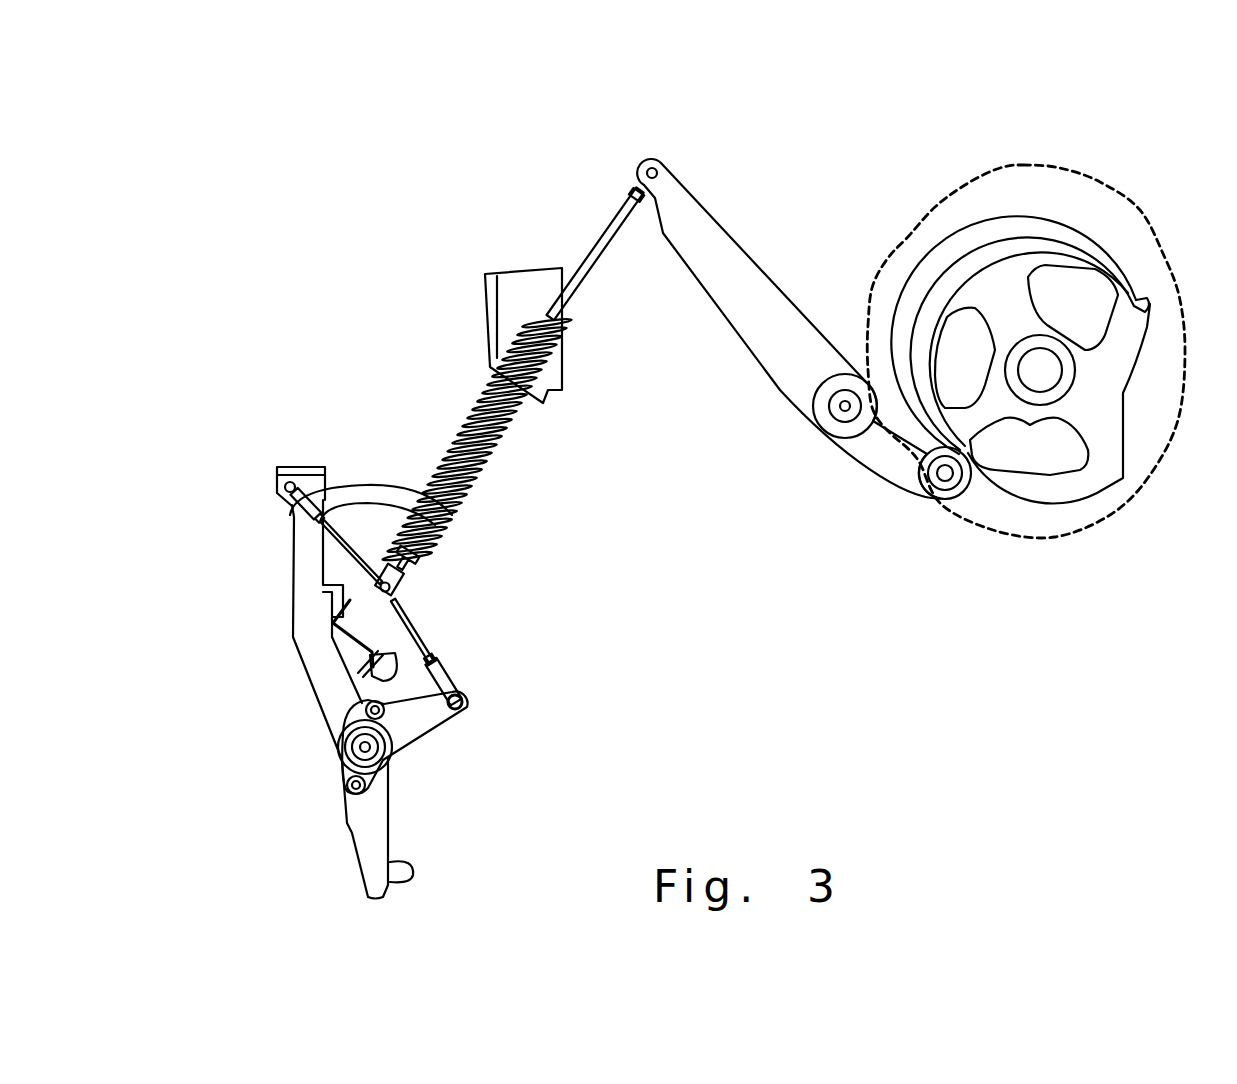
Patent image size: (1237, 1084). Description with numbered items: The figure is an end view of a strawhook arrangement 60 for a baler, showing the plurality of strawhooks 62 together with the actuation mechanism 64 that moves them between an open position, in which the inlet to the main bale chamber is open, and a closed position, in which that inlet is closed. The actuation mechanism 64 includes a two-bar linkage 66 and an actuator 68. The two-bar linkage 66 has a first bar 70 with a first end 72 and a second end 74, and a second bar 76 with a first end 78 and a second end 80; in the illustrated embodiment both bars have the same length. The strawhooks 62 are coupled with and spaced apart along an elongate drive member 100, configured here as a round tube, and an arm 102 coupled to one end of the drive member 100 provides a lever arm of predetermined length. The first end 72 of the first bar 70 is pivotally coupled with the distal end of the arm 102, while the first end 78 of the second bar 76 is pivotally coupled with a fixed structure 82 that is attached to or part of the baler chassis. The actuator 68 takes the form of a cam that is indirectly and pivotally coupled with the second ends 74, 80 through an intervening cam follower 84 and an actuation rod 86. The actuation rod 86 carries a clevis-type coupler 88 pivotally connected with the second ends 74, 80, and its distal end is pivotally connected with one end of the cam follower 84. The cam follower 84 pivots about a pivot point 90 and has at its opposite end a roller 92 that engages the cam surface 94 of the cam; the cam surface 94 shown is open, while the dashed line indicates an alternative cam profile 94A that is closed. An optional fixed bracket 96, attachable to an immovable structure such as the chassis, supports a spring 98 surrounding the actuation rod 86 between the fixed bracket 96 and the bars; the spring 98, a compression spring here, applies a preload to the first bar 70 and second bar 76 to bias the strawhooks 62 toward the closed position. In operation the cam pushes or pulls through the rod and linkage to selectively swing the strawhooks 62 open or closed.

The strawhook arrangement 60 is at (572, 133).
The strawhooks 62 is at (308, 709).
The actuation mechanism 64 is at (665, 500).
The two-bar linkage 66 is at (414, 684).
The actuator 68 is at (1042, 520).
The first bar 70 is at (437, 655).
The first end of the first bar 72 is at (462, 685).
The second end of the first bar 74 is at (390, 600).
The second bar 76 is at (350, 537).
The first end of the second bar 78 is at (288, 508).
The second end of the second bar 80 is at (343, 592).
The fixed structure 82 is at (307, 468).
The cam follower 84 is at (766, 244).
The actuation rod 86 is at (610, 233).
The clevis-type coupler 88 is at (395, 588).
The pivot point 90 is at (833, 417).
The roller 92 is at (945, 477).
The cam surface 94 is at (1053, 243).
The alternative cam profile 94A is at (1100, 533).
The fixed bracket 96 is at (483, 302).
The spring 98 is at (477, 427).
The elongate drive member 100 is at (355, 753).
The arm 102 is at (453, 723).